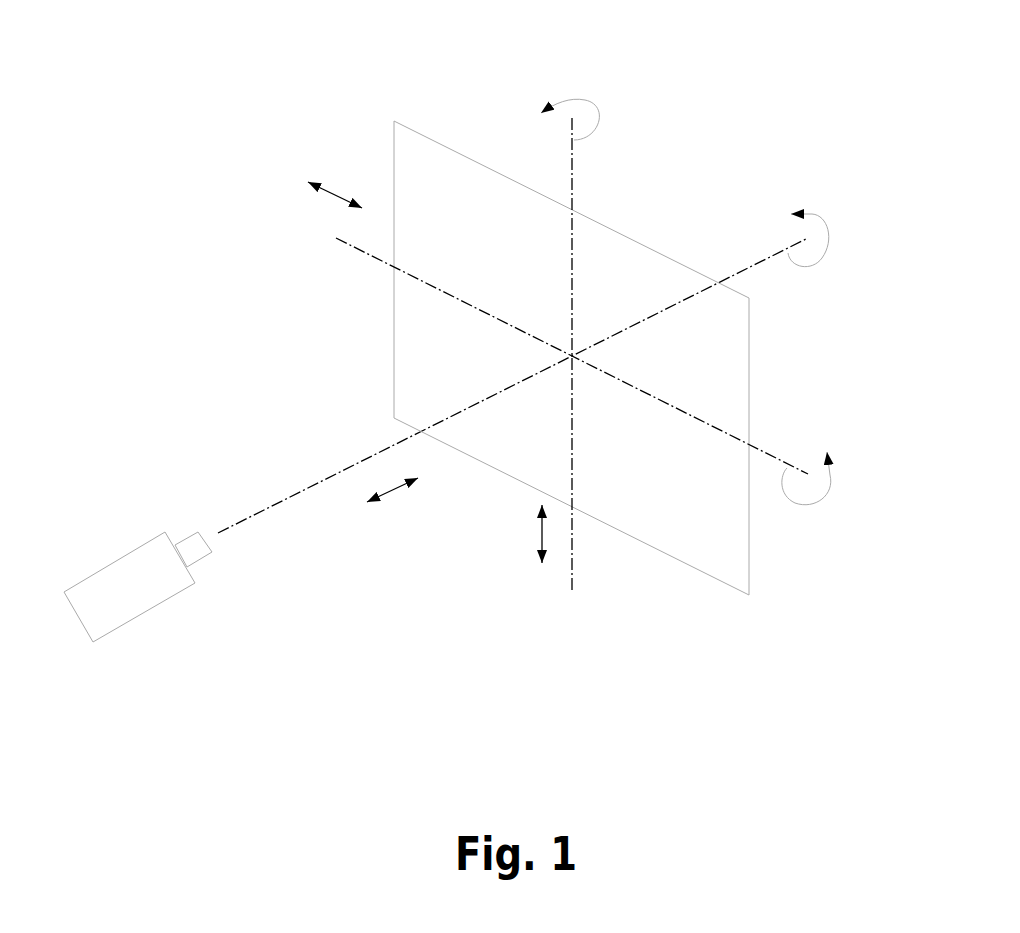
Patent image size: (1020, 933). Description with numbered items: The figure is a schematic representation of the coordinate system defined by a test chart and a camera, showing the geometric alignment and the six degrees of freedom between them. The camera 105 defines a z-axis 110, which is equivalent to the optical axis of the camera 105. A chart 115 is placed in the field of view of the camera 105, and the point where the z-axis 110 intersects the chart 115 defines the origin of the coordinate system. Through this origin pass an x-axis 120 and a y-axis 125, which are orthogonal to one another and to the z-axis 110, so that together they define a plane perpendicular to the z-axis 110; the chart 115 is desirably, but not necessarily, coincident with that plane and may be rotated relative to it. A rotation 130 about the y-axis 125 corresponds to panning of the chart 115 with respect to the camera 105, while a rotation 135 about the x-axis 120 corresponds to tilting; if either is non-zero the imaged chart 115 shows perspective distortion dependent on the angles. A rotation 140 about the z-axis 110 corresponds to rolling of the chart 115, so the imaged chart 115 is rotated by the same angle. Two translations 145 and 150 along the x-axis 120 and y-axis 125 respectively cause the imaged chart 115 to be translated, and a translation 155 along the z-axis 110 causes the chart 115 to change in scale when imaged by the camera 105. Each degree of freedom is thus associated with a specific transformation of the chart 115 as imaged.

The camera 105 is at (128, 622).
The z-axis 110 is at (277, 503).
The chart 115 is at (484, 160).
The x-axis 120 is at (365, 252).
The y-axis 125 is at (572, 563).
The rotation about the y-axis 130 is at (578, 100).
The rotation about the x-axis 135 is at (808, 505).
The rotation about the z-axis 140 is at (808, 213).
The translation along the x-axis 145 is at (335, 190).
The translation along the y-axis 150 is at (541, 533).
The translation along the z-axis 155 is at (395, 487).